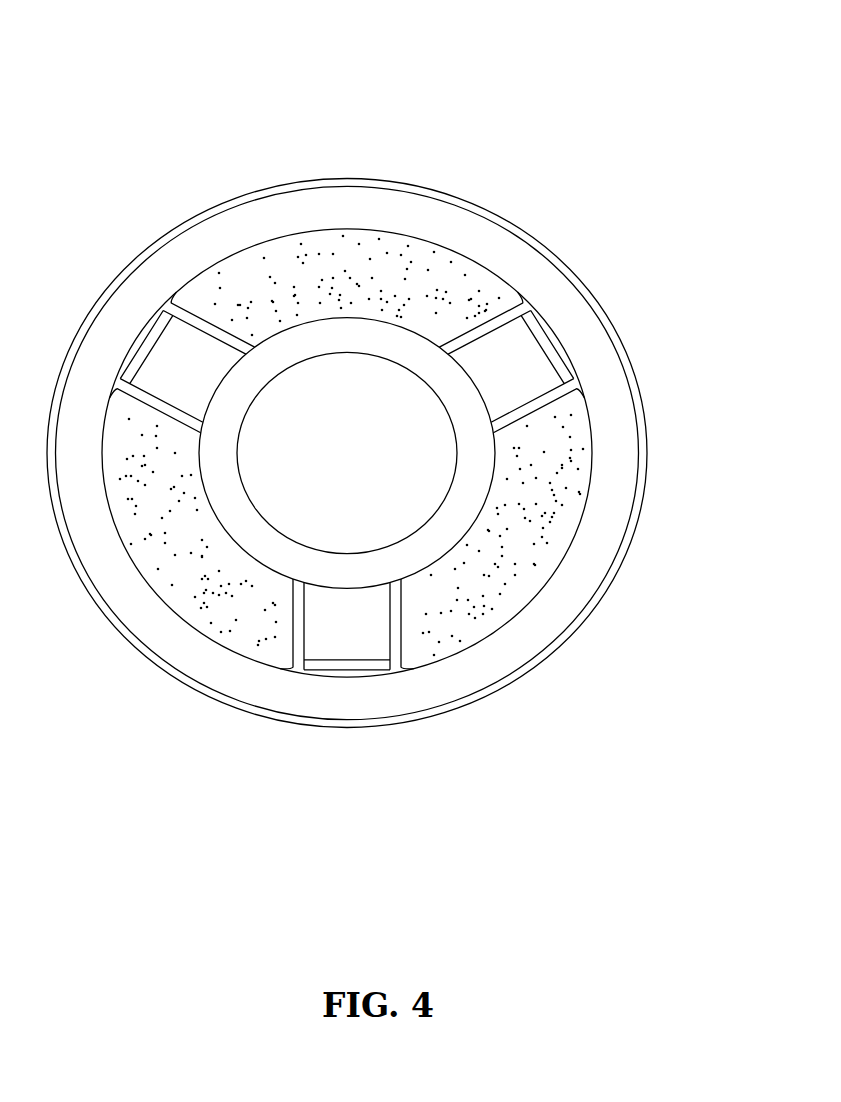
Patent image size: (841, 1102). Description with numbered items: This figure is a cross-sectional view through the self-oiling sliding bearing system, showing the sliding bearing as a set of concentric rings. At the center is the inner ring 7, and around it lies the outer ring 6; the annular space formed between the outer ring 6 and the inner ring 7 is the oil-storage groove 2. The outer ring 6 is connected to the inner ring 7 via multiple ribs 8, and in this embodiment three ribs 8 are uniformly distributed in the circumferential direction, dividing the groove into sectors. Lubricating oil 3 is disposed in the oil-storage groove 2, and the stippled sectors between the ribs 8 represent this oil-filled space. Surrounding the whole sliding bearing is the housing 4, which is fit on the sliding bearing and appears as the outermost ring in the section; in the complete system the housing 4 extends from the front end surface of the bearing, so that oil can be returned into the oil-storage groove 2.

The oil-storage groove 2 is at (292, 263).
The lubricating oil 3 is at (435, 303).
The housing 4 is at (412, 185).
The outer ring 6 is at (268, 230).
The inner ring 7 is at (322, 558).
The ribs 8 is at (518, 355).